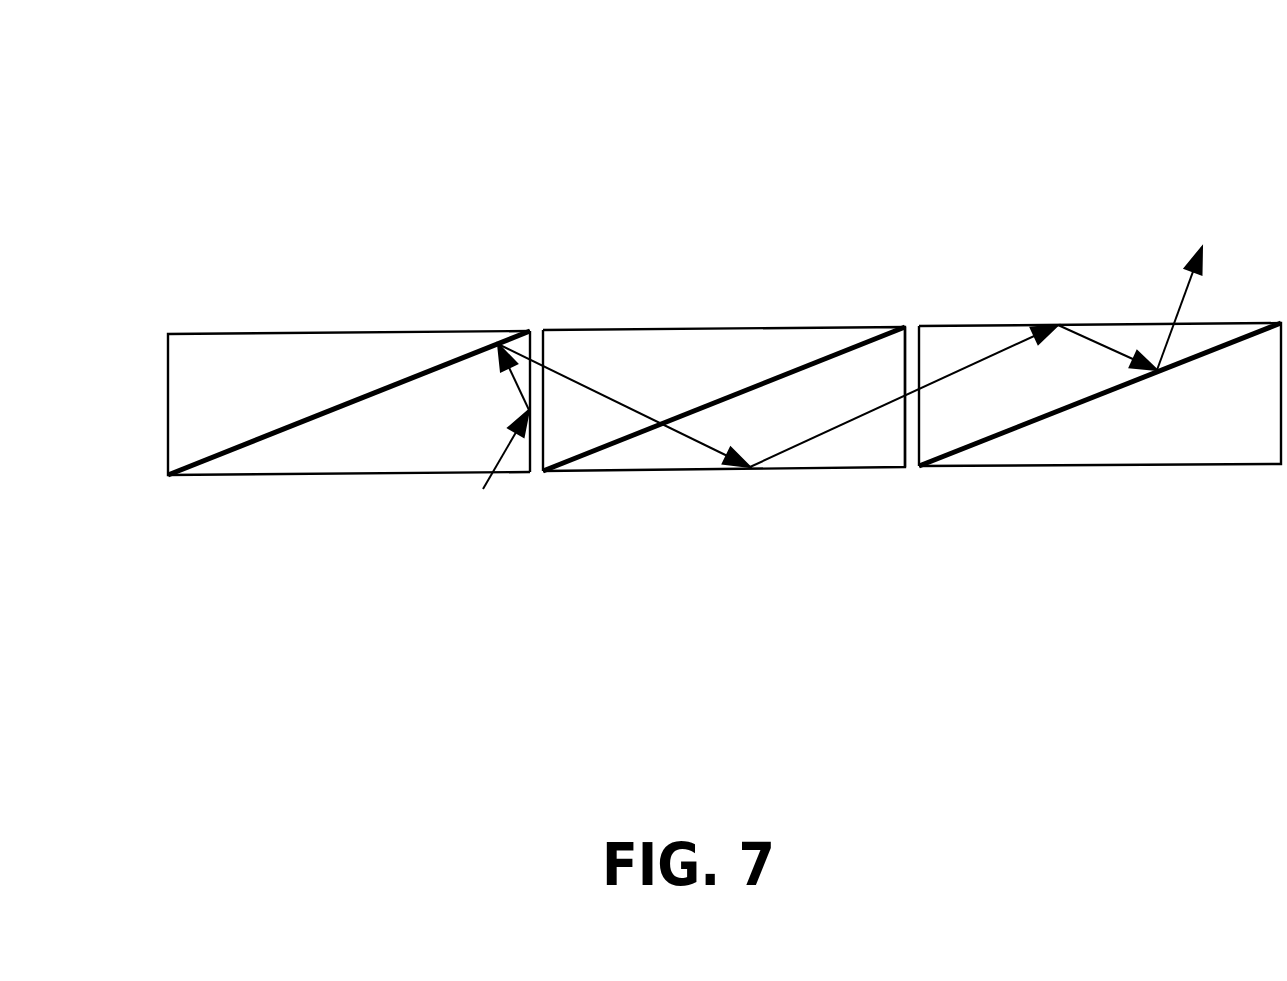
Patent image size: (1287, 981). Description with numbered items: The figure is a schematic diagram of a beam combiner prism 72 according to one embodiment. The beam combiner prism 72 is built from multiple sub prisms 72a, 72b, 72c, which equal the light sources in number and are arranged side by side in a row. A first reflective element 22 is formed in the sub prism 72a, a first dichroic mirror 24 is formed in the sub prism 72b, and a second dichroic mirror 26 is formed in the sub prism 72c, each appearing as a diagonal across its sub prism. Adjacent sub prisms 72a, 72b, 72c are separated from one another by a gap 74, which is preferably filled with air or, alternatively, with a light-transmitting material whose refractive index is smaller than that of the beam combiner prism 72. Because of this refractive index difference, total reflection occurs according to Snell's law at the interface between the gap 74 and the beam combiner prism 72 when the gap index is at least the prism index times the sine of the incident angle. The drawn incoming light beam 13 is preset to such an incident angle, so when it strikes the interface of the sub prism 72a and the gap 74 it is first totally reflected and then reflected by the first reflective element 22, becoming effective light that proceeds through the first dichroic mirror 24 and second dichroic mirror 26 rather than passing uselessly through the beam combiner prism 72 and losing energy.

The beam combiner prism 72 is at (108, 78).
The sub prism 72a is at (348, 334).
The sub prism 72b is at (725, 329).
The sub prism 72c is at (1101, 325).
The first reflective element 22 is at (352, 400).
The first dichroic mirror 24 is at (740, 392).
The second dichroic mirror 26 is at (1110, 390).
The incoming light beam 13 is at (831, 391).
The gap 74 is at (535, 467).